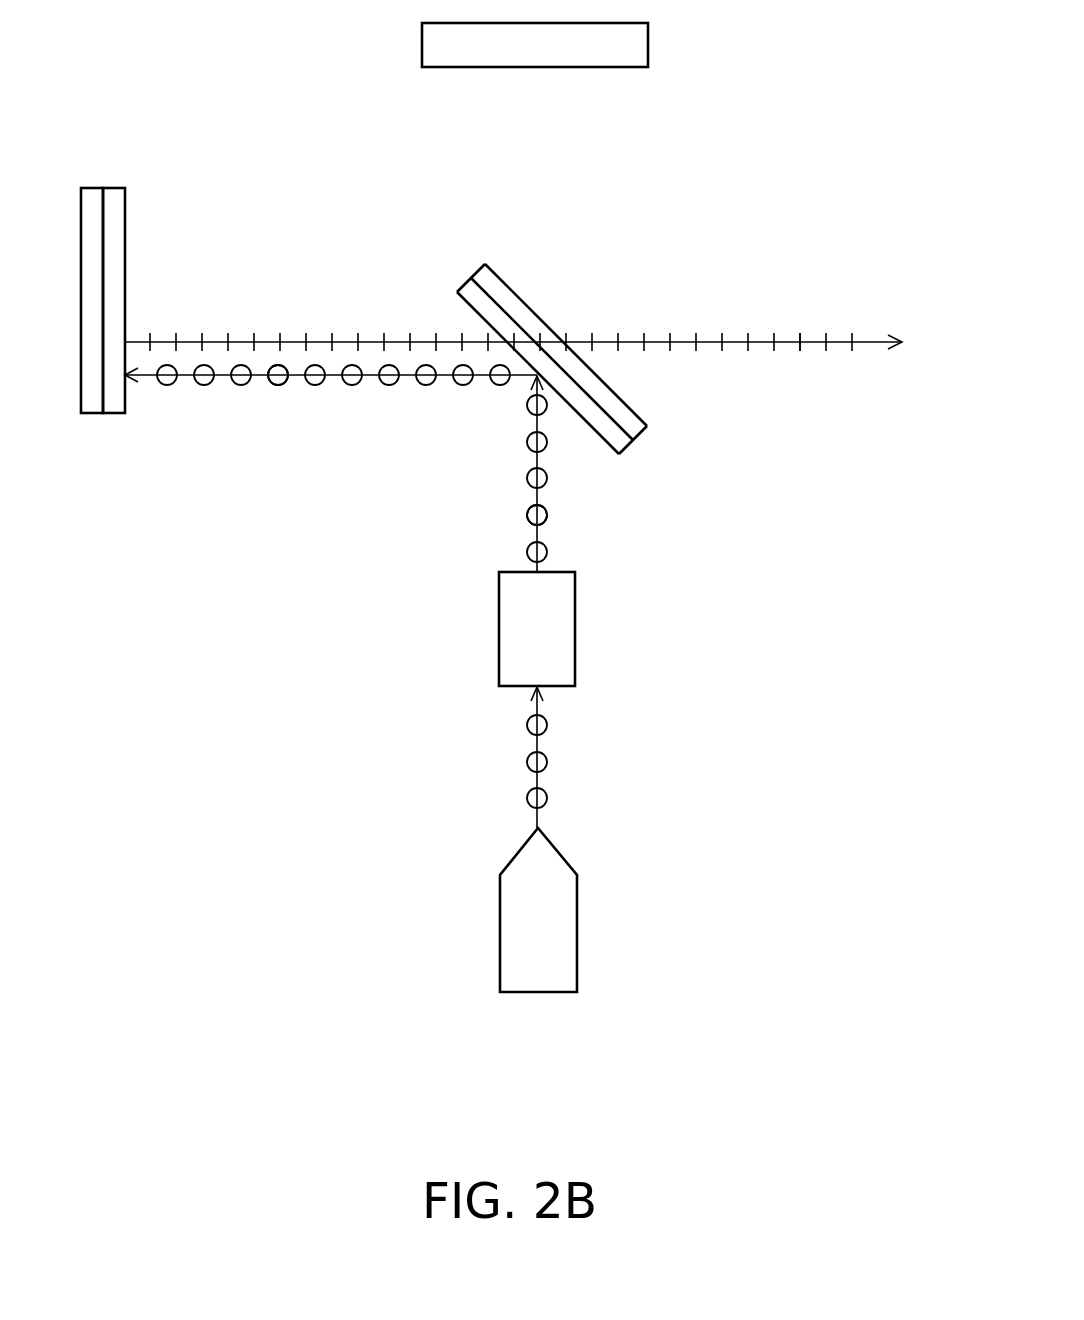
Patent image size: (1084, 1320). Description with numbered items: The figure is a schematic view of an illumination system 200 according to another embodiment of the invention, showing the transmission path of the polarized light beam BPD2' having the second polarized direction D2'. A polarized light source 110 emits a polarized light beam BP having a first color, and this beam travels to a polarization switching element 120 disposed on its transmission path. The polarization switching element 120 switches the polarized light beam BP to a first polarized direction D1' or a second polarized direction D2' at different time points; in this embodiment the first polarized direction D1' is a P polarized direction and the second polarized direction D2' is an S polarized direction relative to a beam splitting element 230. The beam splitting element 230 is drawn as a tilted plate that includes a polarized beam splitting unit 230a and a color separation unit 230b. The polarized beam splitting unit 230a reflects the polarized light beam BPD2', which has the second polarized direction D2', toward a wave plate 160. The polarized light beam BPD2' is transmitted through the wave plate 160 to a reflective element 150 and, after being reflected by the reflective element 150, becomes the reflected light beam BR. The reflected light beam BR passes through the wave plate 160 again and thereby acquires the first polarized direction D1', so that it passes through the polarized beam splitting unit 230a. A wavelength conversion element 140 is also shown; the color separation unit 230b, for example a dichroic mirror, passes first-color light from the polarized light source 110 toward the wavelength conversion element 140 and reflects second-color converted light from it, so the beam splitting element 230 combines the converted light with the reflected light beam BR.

The polarized light source 110 is at (577, 932).
The polarization switching element 120 is at (575, 630).
The wavelength conversion element 140 is at (648, 43).
The reflective element 150 is at (91, 413).
The wave plate 160 is at (115, 413).
The illumination system 200 is at (892, 1083).
The beam splitting element 230 is at (617, 415).
The polarized beam splitting unit 230a is at (618, 440).
The color separation unit 230b is at (640, 423).
The polarized light beam BP is at (536, 778).
The reflected light beam BR is at (868, 345).
The first polarized direction D1' is at (813, 369).
The second polarized direction D2' is at (406, 450).
The polarized light beam having the second polarized direction BPD2' is at (336, 468).